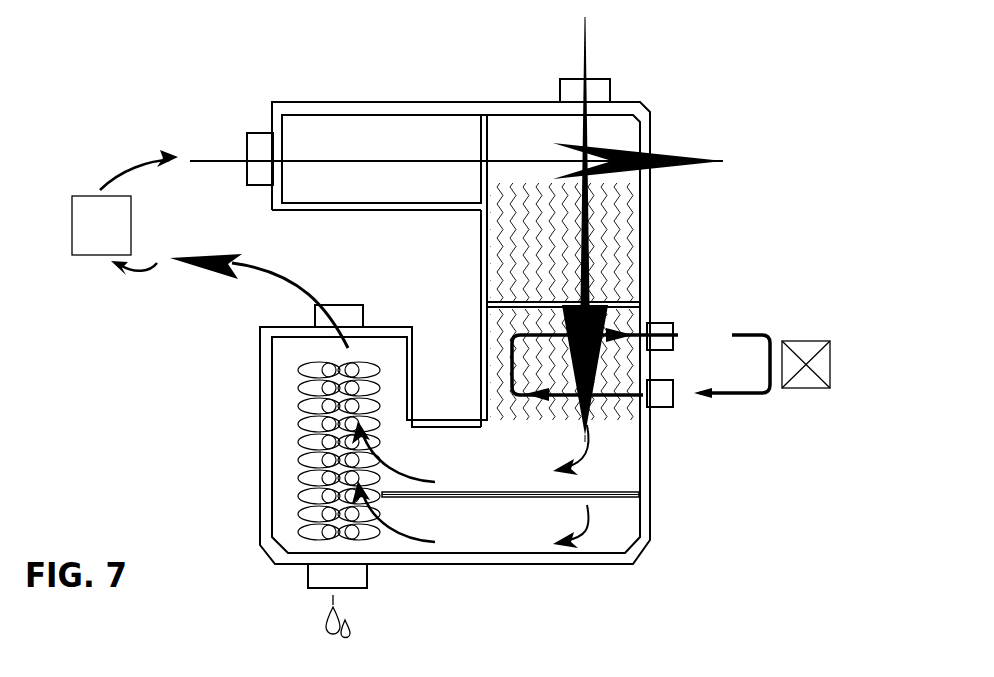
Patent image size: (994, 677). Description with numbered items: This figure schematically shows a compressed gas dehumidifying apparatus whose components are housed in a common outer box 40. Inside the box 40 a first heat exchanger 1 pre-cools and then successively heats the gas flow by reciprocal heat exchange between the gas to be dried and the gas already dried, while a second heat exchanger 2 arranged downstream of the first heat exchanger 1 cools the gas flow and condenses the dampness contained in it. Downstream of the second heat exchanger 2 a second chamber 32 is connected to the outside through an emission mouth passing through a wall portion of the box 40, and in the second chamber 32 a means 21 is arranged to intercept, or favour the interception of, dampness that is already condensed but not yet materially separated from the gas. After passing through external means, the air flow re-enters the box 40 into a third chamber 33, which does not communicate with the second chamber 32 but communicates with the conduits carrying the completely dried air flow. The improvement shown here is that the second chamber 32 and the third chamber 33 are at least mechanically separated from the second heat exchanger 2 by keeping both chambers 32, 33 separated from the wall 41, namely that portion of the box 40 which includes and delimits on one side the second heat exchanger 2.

The first heat exchanger 1 is at (612, 215).
The second heat exchanger 2 is at (620, 318).
The means for intercepting dampness 21 is at (307, 462).
The second chamber 32 is at (285, 352).
The third chamber 33 is at (338, 137).
The outer box 40 is at (390, 108).
The wall 41 is at (478, 355).